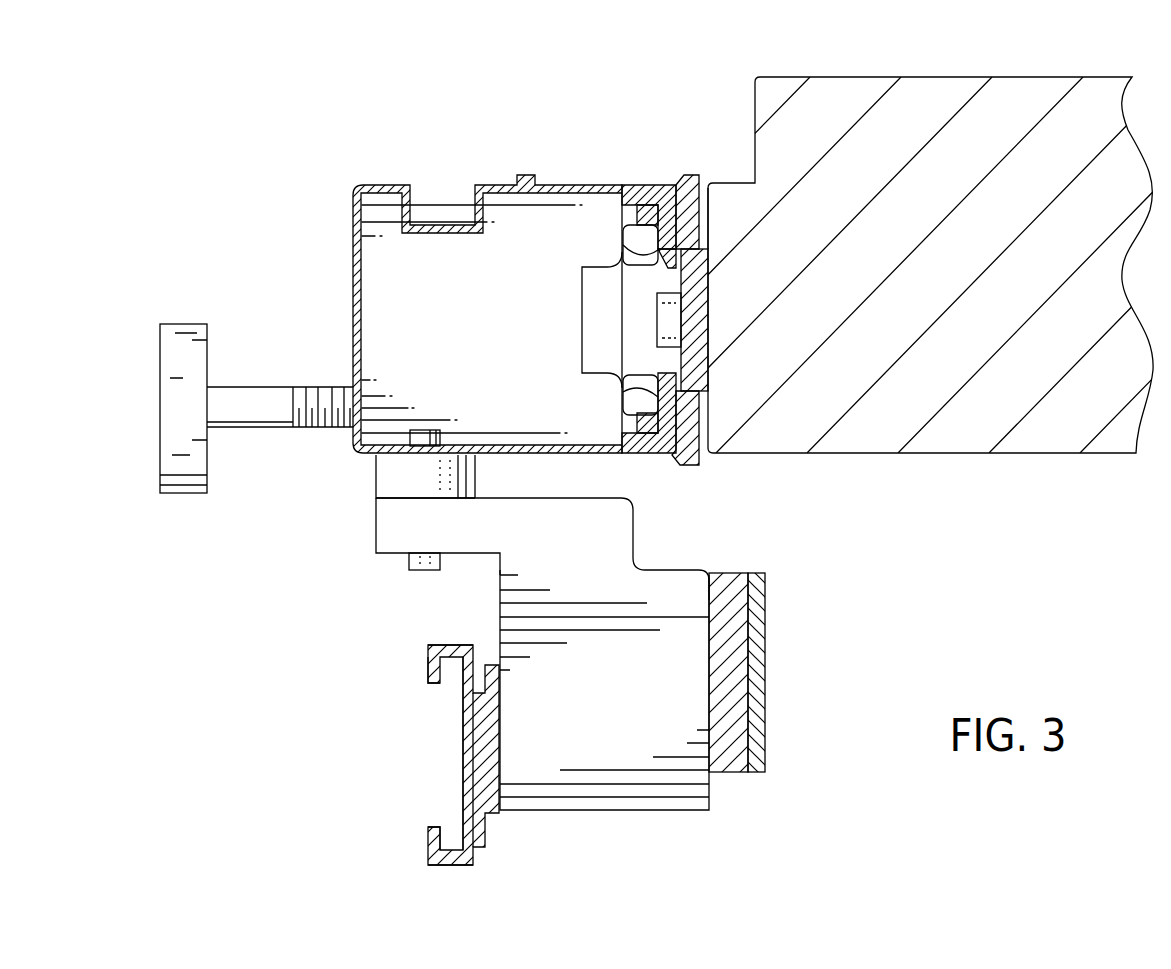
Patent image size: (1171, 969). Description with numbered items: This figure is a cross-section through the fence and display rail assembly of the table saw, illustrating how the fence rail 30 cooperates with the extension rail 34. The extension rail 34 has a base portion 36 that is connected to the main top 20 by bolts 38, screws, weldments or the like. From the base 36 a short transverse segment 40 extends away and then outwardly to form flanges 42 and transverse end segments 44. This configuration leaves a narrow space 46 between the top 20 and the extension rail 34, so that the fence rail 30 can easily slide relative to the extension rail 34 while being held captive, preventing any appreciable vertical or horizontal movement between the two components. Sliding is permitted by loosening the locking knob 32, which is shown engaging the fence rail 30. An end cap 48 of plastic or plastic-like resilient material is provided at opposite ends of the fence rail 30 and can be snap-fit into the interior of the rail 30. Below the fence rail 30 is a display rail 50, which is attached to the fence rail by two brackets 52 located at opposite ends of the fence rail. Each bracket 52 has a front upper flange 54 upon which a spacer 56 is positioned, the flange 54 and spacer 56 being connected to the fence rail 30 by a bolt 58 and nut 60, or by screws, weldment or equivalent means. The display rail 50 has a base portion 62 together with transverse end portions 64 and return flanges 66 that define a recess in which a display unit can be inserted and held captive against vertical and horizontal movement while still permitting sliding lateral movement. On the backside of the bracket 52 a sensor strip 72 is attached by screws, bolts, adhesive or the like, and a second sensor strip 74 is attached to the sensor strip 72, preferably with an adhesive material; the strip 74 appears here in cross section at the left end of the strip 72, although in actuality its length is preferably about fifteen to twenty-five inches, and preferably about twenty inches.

The main top 20 is at (945, 77).
The fence rail 30 is at (352, 280).
The locking knob 32 is at (182, 370).
The extension rail 34 is at (670, 270).
The base portion 36 is at (695, 340).
The bolts 38 is at (660, 318).
The short transverse segment 40 is at (632, 262).
The flanges 42 is at (637, 228).
The transverse end segments 44 is at (649, 220).
The narrow space 46 is at (706, 194).
The end cap 48 is at (438, 337).
The display rail 50 is at (463, 783).
The brackets 52 is at (601, 752).
The front upper flange 54 is at (393, 530).
The spacer 56 is at (400, 477).
The bolt 58 is at (420, 570).
The nut 60 is at (417, 438).
The base portion 62 is at (485, 742).
The transverse end portions 64 is at (447, 646).
The return flanges 66 is at (432, 668).
The sensor strip 72 is at (738, 745).
The sensor strip 74 is at (757, 637).